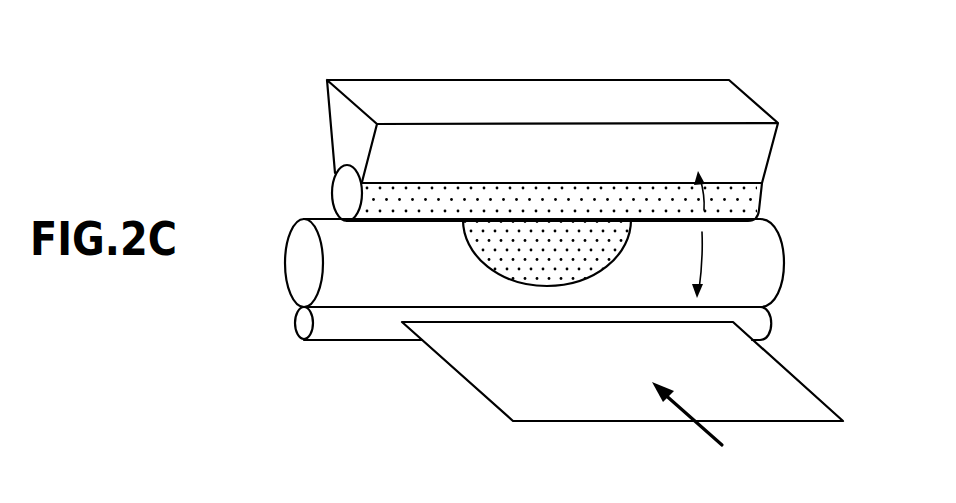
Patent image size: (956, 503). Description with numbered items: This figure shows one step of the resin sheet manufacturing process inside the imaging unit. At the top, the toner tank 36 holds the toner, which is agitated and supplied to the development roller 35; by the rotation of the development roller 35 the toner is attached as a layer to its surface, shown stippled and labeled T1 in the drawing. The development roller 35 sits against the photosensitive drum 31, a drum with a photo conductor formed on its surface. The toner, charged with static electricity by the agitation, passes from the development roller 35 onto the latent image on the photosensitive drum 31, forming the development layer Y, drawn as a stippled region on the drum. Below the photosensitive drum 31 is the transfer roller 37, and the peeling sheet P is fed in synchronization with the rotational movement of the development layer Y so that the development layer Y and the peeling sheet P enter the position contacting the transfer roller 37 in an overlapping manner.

The toner tank 36 is at (760, 151).
The development roller 35 is at (755, 201).
The photosensitive drum 31 is at (772, 265).
The transfer roller 37 is at (340, 328).
The peeling sheet P is at (797, 388).
The development layer Y is at (523, 267).
The toner T1 is at (515, 187).